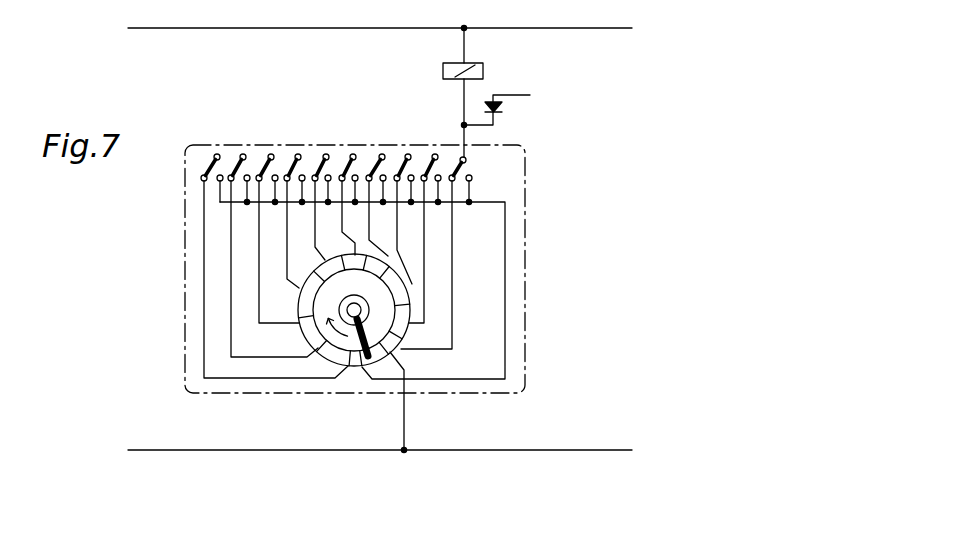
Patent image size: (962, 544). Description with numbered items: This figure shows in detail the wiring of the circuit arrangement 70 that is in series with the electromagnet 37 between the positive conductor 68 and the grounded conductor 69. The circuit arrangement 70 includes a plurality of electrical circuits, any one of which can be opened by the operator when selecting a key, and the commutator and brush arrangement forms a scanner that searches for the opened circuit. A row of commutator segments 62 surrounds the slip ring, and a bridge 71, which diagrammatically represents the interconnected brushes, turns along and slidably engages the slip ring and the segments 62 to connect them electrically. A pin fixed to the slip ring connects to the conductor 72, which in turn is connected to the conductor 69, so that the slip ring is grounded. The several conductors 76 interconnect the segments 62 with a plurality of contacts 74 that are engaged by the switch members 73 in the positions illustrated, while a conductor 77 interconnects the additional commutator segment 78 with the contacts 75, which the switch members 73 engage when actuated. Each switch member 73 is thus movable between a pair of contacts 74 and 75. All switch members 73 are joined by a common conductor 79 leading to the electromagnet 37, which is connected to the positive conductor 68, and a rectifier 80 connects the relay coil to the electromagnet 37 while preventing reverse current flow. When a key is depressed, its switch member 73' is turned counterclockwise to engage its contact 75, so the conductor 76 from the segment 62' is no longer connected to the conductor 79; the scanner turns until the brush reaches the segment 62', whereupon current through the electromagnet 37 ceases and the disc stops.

The conductor 68 is at (252, 29).
The conductor 69 is at (208, 452).
The electromagnet 37 is at (478, 63).
The rectifier 80 is at (503, 109).
The circuit arrangement 70 is at (530, 279).
The switch member 73 is at (240, 152).
The switch member 73' is at (349, 153).
The contact 74 is at (223, 160).
The contact 75 is at (252, 163).
The common conductor 79 is at (391, 162).
The conductor 77 is at (493, 202).
The conductor 76 is at (231, 280).
The commutator segment 62 is at (339, 338).
The commutator segment 62' is at (428, 283).
The bridge 71 is at (349, 368).
The additional commutator segment 78 is at (363, 368).
The conductor 72 is at (405, 404).